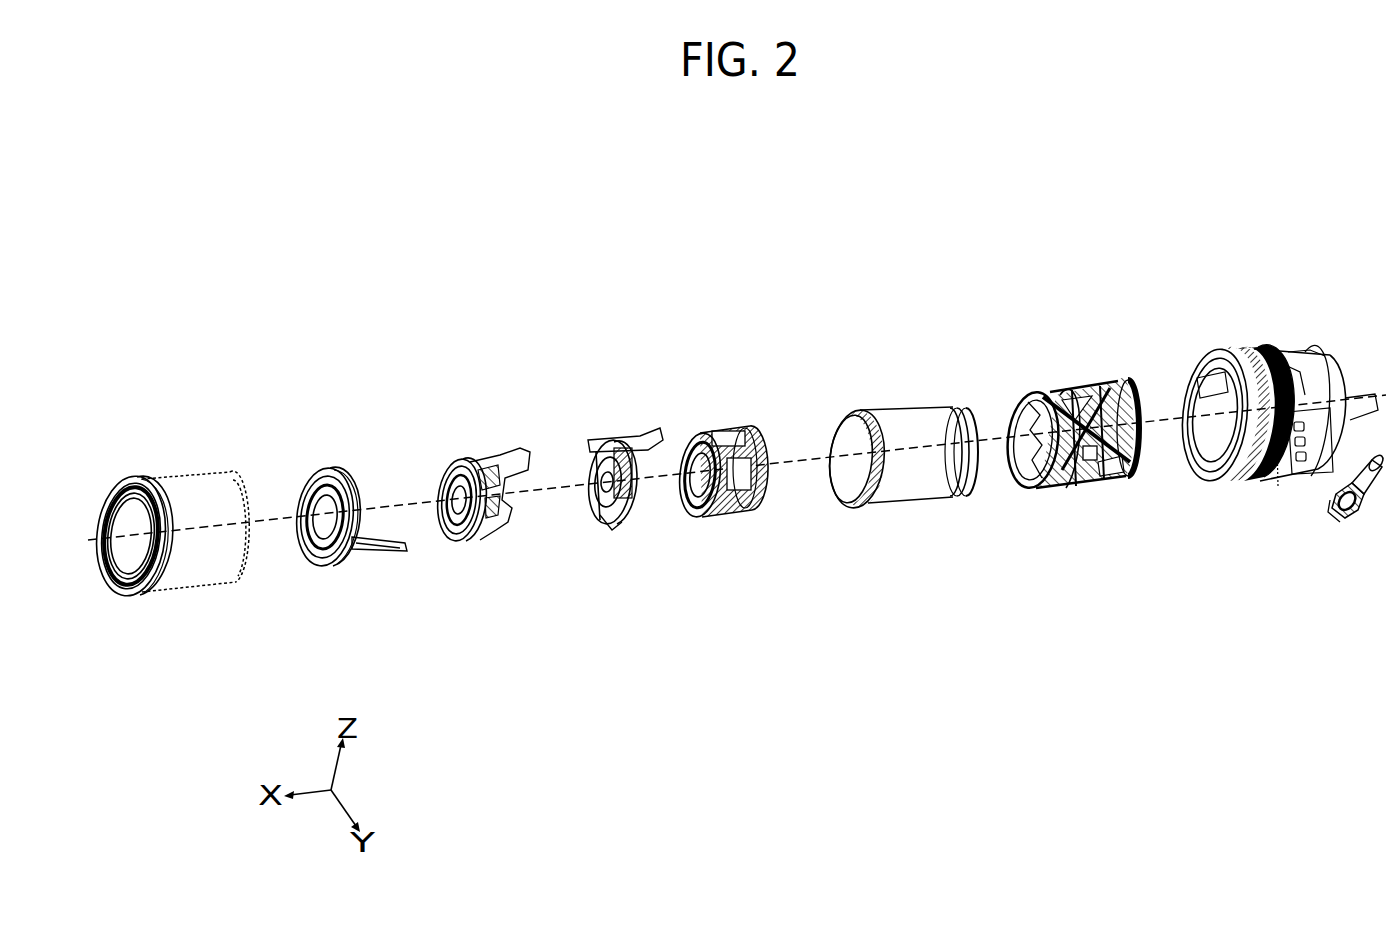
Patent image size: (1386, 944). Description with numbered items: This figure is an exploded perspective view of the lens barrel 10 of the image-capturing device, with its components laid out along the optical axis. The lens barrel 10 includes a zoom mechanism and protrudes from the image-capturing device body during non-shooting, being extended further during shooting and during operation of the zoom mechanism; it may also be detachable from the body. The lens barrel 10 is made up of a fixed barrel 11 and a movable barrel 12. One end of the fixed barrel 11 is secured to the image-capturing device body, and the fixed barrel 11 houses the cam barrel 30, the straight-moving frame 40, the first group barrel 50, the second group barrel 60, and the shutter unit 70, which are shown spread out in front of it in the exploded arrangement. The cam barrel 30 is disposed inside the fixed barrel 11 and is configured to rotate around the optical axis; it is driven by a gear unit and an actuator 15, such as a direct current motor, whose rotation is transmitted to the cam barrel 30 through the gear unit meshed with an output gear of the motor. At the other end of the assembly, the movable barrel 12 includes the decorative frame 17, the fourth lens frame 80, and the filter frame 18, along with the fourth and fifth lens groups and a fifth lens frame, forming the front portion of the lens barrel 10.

The lens barrel 10 is at (1310, 215).
The fixed barrel 11 is at (1275, 344).
The movable barrel 12 is at (297, 358).
The actuator 15 is at (1334, 520).
The decorative frame 17 is at (173, 487).
The filter frame 18 is at (110, 490).
The cam barrel 30 is at (1062, 379).
The straight-moving frame 40 is at (880, 404).
The first group barrel 50 is at (710, 425).
The second group barrel 60 is at (609, 434).
The shutter unit 70 is at (491, 450).
The fourth lens frame 80 is at (318, 464).